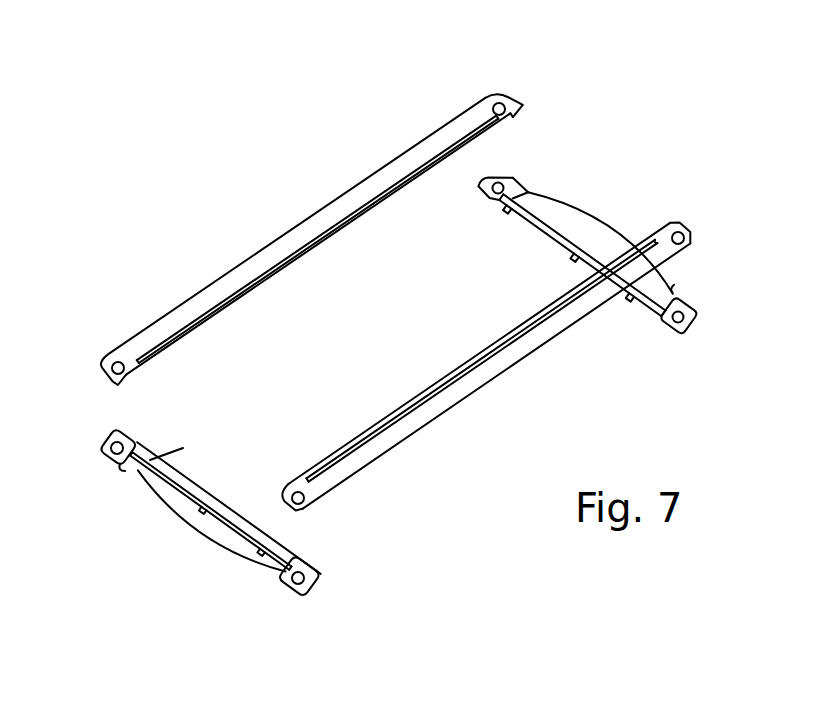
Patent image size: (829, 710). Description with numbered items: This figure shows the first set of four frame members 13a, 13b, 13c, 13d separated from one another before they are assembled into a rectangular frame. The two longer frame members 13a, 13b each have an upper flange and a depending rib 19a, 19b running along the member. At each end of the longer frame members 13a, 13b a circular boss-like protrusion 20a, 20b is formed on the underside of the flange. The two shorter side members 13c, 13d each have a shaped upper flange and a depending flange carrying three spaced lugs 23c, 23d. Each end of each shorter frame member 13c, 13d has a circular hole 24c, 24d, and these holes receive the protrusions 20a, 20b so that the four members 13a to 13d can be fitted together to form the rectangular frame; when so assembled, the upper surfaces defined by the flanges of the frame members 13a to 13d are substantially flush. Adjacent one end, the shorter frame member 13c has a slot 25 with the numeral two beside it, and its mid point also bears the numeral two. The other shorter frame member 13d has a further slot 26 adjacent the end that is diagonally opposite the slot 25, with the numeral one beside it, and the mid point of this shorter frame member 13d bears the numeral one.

The longer frame member 13a is at (570, 327).
The longer frame member 13b is at (397, 170).
The shorter side member 13c is at (592, 228).
The shorter side member 13d is at (187, 517).
The depending rib 19a is at (536, 322).
The depending rib 19b is at (350, 228).
The circular boss-like protrusion 20a is at (685, 239).
The circular boss-like protrusion 20b is at (502, 108).
The spaced lugs 23c is at (572, 260).
The spaced lugs 23d is at (262, 547).
The circular hole 24c is at (499, 187).
The circular hole 24d is at (108, 449).
The slot 25 is at (669, 296).
The further slot 26 is at (125, 471).